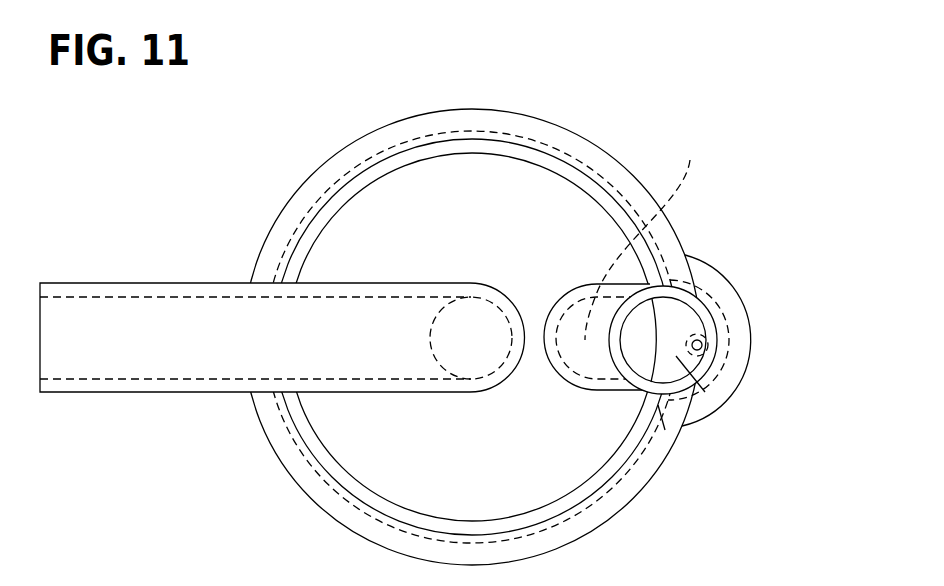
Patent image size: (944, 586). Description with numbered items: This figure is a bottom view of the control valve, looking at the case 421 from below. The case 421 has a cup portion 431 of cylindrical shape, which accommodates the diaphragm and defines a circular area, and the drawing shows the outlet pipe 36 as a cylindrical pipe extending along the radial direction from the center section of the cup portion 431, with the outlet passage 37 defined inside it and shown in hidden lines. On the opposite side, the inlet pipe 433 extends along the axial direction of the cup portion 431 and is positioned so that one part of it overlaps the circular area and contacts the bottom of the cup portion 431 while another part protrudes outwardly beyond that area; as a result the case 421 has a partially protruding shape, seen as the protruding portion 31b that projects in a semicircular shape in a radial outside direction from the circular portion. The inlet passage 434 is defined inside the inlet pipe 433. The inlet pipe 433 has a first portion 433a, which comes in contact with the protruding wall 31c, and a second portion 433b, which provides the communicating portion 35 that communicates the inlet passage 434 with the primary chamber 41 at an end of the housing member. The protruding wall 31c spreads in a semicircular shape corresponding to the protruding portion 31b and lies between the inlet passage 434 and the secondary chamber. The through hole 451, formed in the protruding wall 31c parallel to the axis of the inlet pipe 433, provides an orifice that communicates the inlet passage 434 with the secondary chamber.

The cup portion 431 is at (278, 218).
The case 421 is at (613, 162).
The primary chamber 41 is at (650, 236).
The inlet passage 434 is at (670, 318).
The inlet pipe 433 is at (712, 300).
The first portion 433a is at (715, 268).
The second portion 433b is at (665, 430).
The protruding portion 31b is at (749, 318).
The protruding wall 31c is at (697, 392).
The through hole 451 is at (702, 352).
The communicating portion 35 is at (612, 375).
The outlet pipe 36 is at (155, 282).
The outlet passage 37 is at (112, 330).